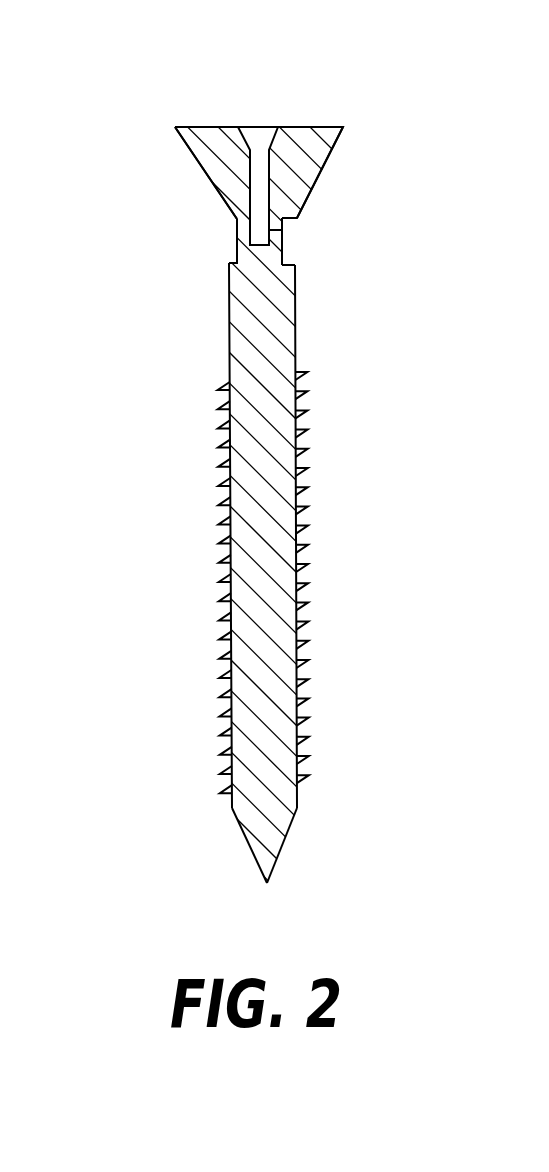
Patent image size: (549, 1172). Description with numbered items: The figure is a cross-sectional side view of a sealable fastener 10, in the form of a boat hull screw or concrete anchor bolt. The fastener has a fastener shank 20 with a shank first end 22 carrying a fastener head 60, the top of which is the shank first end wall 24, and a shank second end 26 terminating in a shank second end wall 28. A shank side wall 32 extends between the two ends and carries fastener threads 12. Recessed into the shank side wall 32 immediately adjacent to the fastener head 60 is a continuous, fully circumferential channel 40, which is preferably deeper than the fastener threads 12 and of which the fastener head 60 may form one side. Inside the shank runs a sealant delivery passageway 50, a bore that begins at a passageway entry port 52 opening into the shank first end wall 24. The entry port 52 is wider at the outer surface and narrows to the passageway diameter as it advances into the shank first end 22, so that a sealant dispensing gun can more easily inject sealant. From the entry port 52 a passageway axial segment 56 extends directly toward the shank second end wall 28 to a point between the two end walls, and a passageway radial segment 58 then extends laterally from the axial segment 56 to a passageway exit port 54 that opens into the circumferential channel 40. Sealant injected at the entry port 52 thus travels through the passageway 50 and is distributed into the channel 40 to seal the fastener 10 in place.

The sealable fastener 10 is at (138, 88).
The fastener threads 12 is at (222, 468).
The fastener shank 20 is at (229, 327).
The shank first end 22 is at (186, 145).
The shank first end wall 24 is at (323, 127).
The shank second end 26 is at (290, 835).
The shank second end wall 28 is at (257, 850).
The shank side wall 32 is at (223, 533).
The circumferential channel 40 is at (237, 238).
The sealant delivery passageway 50 is at (214, 186).
The passageway entry port 52 is at (253, 127).
The passageway exit port 54 is at (283, 240).
The passageway axial segment 56 is at (270, 198).
The passageway radial segment 58 is at (272, 250).
The fastener head 60 is at (343, 147).